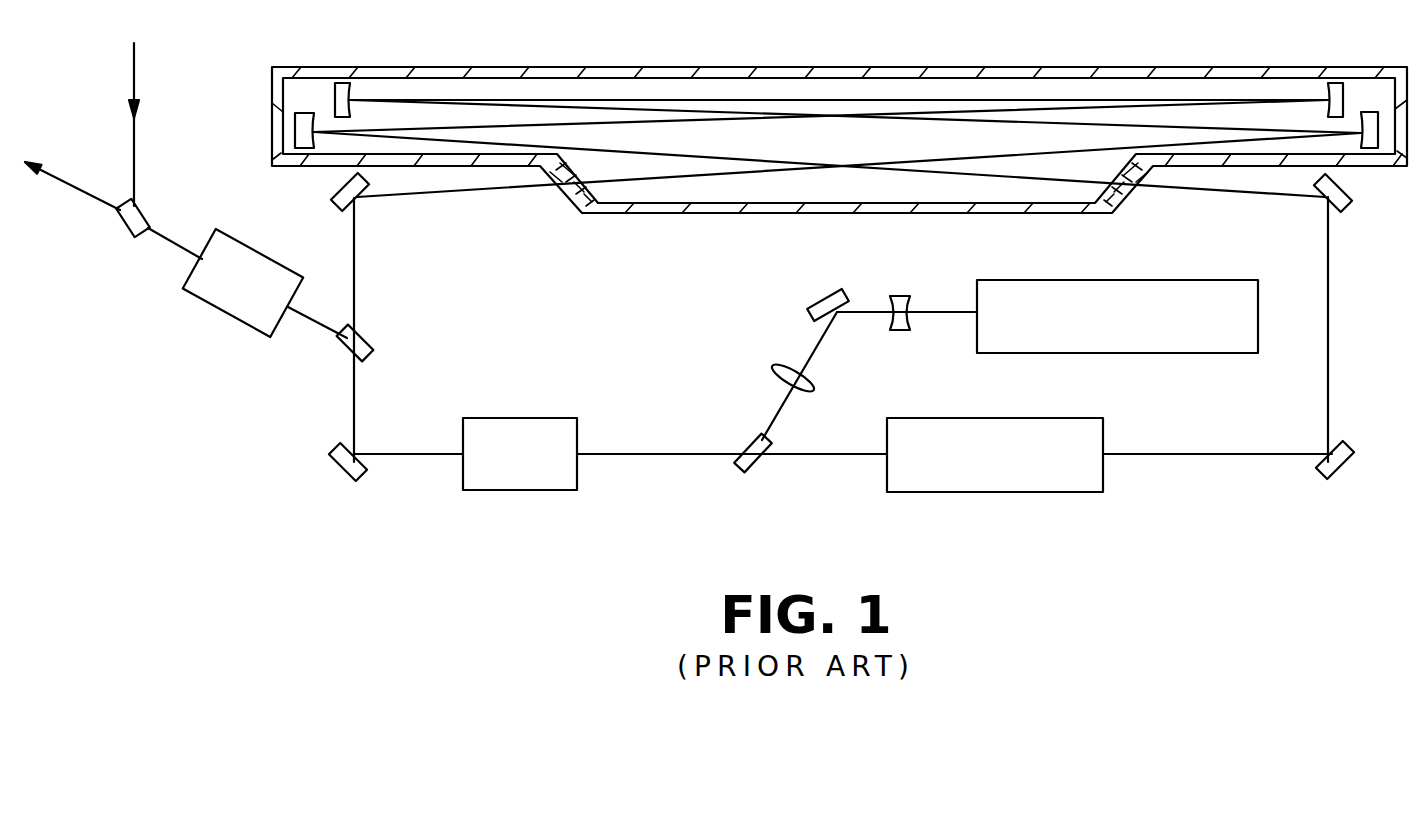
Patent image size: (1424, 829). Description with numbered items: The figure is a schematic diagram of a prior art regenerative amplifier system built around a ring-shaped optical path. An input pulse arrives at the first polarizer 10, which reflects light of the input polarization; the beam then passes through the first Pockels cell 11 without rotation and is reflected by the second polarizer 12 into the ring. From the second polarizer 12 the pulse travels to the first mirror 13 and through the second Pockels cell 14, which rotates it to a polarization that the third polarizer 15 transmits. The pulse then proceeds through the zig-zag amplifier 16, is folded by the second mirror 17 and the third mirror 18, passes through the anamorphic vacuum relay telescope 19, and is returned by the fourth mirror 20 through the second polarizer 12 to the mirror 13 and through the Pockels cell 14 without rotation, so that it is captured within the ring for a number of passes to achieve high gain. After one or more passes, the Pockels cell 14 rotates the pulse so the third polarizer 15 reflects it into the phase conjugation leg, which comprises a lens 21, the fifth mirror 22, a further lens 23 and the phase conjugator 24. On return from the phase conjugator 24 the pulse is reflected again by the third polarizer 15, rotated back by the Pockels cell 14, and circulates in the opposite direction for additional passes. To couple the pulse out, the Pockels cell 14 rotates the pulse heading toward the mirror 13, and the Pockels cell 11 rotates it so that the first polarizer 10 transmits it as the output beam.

The first polarizer 10 is at (124, 227).
The first Pockels cell 11 is at (233, 320).
The second polarizer 12 is at (368, 341).
The first mirror 13 is at (340, 472).
The second Pockels cell 14 is at (530, 418).
The third polarizer 15 is at (757, 470).
The zig-zag amplifier 16 is at (1014, 492).
The second mirror 17 is at (1347, 468).
The third mirror 18 is at (1346, 207).
The anamorphic vacuum relay (telescope) 19 is at (1175, 67).
The fourth mirror 20 is at (335, 188).
The lens 21 is at (782, 362).
The fifth mirror 22 is at (818, 300).
The lens 23 is at (903, 296).
The phase conjugator 24 is at (1168, 280).